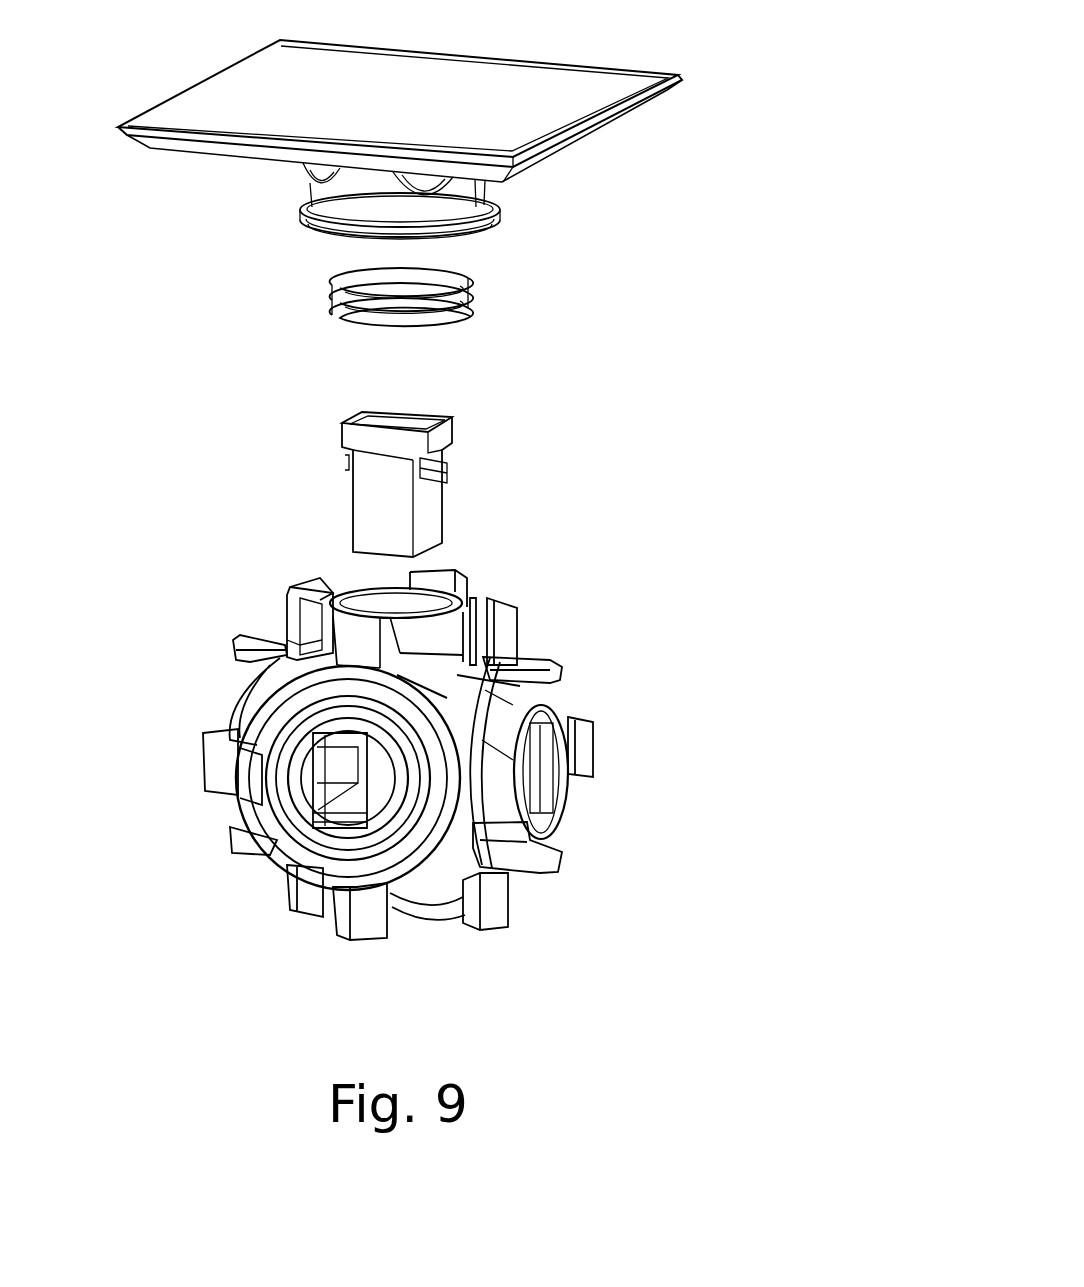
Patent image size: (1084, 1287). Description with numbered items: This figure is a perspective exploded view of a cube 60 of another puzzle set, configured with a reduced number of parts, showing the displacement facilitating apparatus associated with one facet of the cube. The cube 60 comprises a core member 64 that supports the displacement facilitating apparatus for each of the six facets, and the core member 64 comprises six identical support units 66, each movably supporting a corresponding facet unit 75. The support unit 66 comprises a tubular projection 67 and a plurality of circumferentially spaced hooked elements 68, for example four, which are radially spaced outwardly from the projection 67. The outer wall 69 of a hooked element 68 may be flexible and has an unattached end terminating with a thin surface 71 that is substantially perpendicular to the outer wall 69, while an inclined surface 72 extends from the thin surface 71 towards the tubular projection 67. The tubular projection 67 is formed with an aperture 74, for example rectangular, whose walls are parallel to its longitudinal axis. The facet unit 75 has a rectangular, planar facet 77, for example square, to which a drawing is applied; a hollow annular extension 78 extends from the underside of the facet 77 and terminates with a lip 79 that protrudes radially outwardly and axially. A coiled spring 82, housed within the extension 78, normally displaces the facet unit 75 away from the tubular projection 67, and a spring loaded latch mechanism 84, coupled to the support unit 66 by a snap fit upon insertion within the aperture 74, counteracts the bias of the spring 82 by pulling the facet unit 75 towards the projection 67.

The cube 60 is at (820, 397).
The core member 64 is at (622, 665).
The support unit 66 is at (530, 584).
The tubular projection 67 is at (502, 723).
The hooked element 68 is at (238, 660).
The outer wall 69 is at (298, 602).
The thin surface 71 is at (302, 587).
The inclined surface 72 is at (433, 582).
The aperture 74 is at (543, 775).
The facet unit 75 is at (556, 208).
The facet 77 is at (625, 82).
The annular extension 78 is at (340, 195).
The lip 79 is at (340, 226).
The coiled spring 82 is at (520, 303).
The spring loaded latch mechanism 84 is at (494, 496).